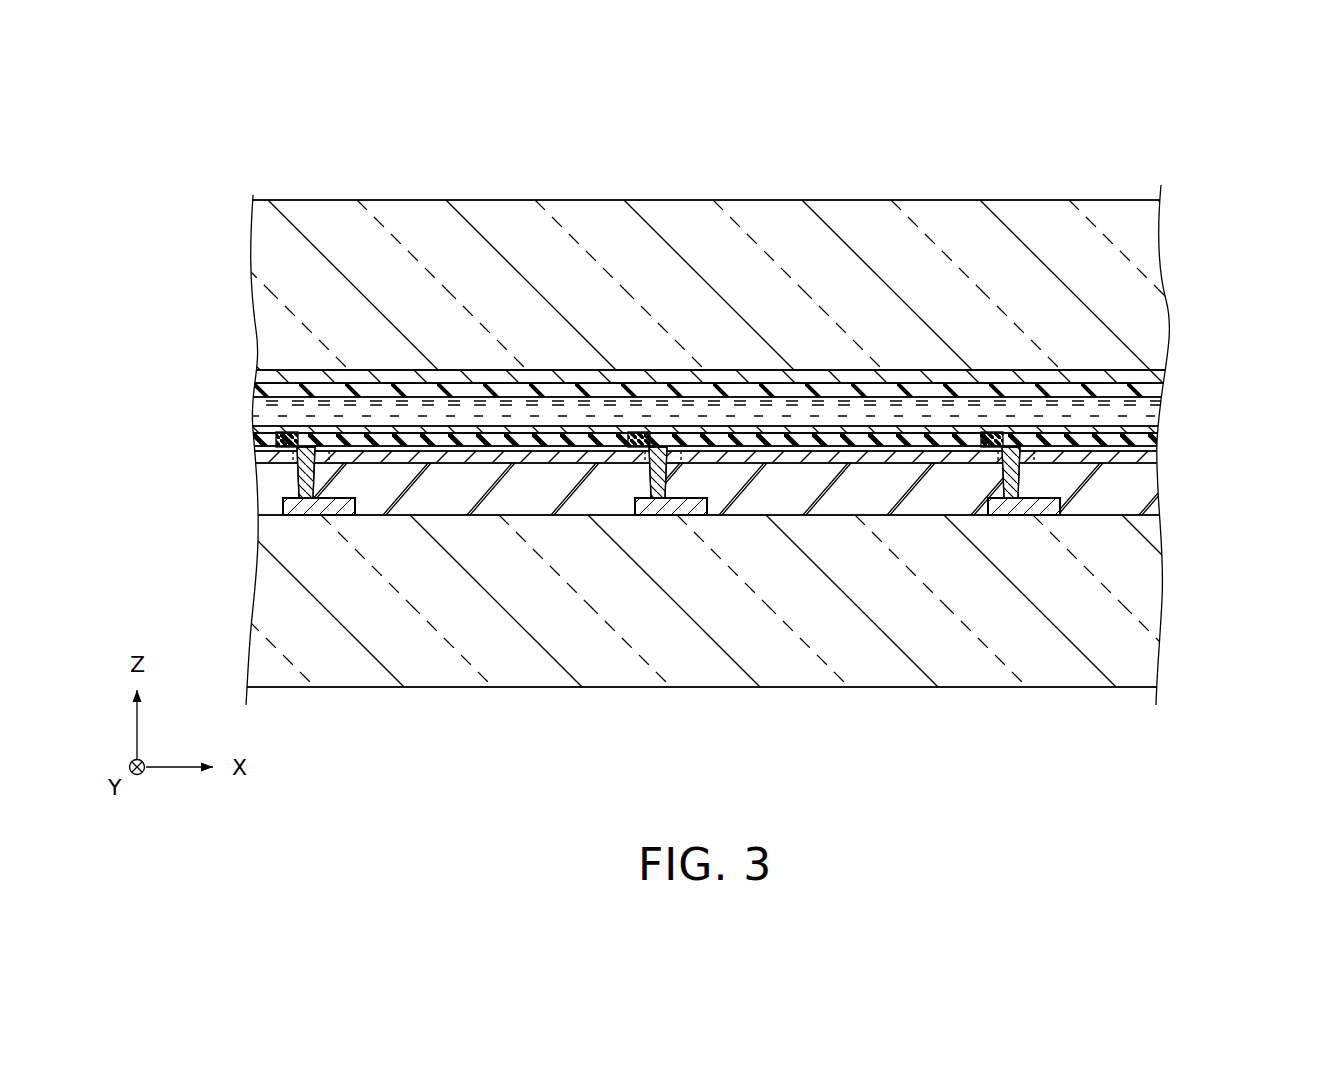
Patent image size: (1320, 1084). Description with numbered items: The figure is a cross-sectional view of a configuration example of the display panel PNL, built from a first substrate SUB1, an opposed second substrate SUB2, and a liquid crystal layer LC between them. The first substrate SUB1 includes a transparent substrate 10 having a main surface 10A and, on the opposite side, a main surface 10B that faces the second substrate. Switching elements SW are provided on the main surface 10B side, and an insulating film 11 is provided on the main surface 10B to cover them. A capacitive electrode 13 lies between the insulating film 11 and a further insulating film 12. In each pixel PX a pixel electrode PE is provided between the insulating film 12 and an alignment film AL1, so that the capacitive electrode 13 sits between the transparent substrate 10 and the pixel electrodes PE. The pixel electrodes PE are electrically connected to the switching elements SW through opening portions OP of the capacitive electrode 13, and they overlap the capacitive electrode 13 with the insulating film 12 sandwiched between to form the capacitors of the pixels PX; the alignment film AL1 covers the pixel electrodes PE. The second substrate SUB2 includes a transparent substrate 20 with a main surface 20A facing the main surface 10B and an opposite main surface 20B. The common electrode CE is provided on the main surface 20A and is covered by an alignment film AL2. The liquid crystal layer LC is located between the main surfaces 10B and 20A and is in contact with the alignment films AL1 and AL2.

The display panel PNL is at (1140, 197).
The transparent substrate 20 is at (262, 278).
The second substrate SUB2 is at (1177, 305).
The main surface 20A is at (885, 383).
The main surface 20B is at (938, 198).
The common electrode CE is at (1155, 378).
The alignment film AL2 is at (1155, 389).
The liquid crystal layer LC is at (1153, 420).
The transparent substrate 10 is at (262, 632).
The first substrate SUB1 is at (1177, 577).
The main surface 10A is at (930, 688).
The main surface 10B is at (840, 503).
The insulating film 11 is at (263, 502).
The switching element SW is at (293, 518).
The capacitive electrode 13 is at (253, 457).
The opening portion OP is at (295, 470).
The insulating film 12 is at (250, 432).
The alignment film AL1 is at (255, 410).
The pixel electrode PE is at (487, 437).
The pixel PX is at (493, 490).